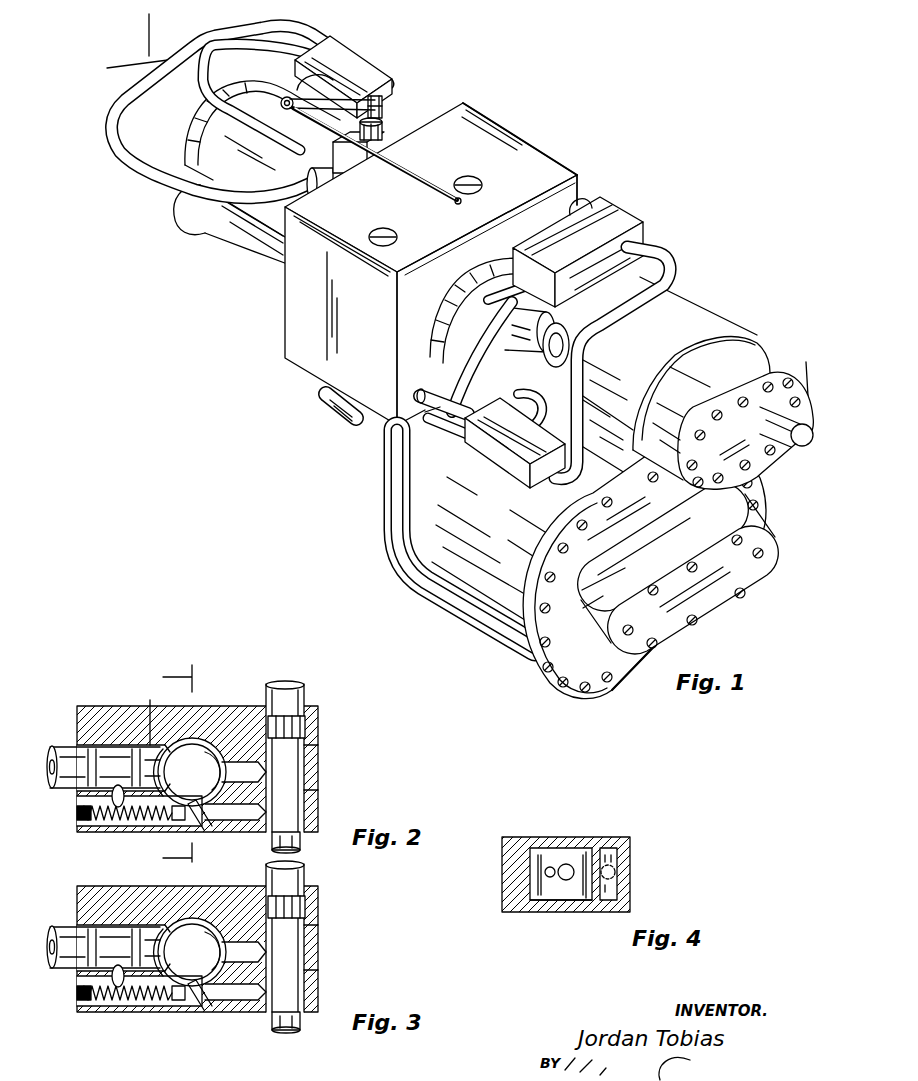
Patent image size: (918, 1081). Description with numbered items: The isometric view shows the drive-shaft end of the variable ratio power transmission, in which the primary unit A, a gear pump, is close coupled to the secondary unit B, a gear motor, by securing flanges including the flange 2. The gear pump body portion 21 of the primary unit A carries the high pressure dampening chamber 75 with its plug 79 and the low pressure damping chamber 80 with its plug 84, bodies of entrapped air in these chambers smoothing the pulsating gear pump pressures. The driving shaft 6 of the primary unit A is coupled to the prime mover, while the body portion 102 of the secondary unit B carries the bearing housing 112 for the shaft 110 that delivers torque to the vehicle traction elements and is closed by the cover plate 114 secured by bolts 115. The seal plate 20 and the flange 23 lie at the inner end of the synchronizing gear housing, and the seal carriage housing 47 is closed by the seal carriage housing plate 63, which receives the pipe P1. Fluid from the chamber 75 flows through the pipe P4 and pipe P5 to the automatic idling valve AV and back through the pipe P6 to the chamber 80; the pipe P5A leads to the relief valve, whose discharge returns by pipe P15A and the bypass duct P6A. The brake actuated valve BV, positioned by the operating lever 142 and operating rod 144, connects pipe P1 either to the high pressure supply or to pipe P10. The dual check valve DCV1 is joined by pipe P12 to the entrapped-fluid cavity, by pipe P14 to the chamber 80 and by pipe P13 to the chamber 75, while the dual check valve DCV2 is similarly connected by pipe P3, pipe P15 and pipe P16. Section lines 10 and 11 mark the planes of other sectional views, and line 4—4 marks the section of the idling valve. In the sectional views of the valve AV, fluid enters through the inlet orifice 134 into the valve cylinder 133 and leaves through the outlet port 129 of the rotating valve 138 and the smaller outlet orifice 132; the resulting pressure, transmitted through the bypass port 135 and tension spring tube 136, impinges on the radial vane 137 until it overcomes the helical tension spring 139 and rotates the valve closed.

In FIG. 1, the pump/motor drum end cap 10 is at (146, 50).
In FIG. 1, the section line 11 is at (459, 219).
In FIG. 1, the pipe P1 is at (214, 96).
In FIG. 1, the seal carriage housing plate 63 is at (202, 127).
In FIG. 1, the operating lever 142 is at (287, 112).
In FIG. 1, the brake actuated valve BV is at (333, 150).
In FIG. 1, the pipe P10 is at (322, 170).
In FIG. 1, the pipe P14 is at (178, 172).
In FIG. 1, the seal carriage housing 47 is at (258, 240).
In FIG. 1, the dual check valve DCV1 is at (348, 47).
In FIG. 1, the pipe P12 is at (385, 73).
In FIG. 1, the pipe P13 is at (399, 92).
In FIG. 1, the primary unit A is at (497, 115).
In FIG. 1, the gear pump body portion 21 is at (520, 133).
In FIG. 1, the low pressure damping chamber 80 is at (537, 150).
In FIG. 1, the operating rod 144 is at (407, 162).
In FIG. 1, the plug 84 is at (481, 185).
In FIG. 1, the plug 79 is at (397, 236).
In FIG. 1, the high pressure dampening chamber 75 is at (305, 306).
In FIG. 1, the shaft 110 is at (340, 406).
In FIG. 1, the seal plate 20 is at (462, 290).
In FIG. 1, the pipe P5A is at (492, 314).
In FIG. 1, the flange 23 is at (455, 343).
In FIG. 1, the pipe P4 is at (413, 392).
In FIG. 1, the pipe P5 is at (466, 365).
In FIG. 2, the pipe P5 is at (65, 745).
In FIG. 3, the pipe P5 is at (94, 929).
In FIG. 1, the fluid relief and replenishing pipe P3 is at (558, 399).
In FIG. 1, the securing flange 2 is at (432, 420).
In FIG. 1, the pipe P16 is at (462, 440).
In FIG. 1, the dual check valve DCV2 is at (532, 488).
In FIG. 1, the secondary unit body portion 102 is at (410, 540).
In FIG. 1, the secondary unit B is at (440, 598).
In FIG. 1, the pipe P6 is at (585, 200).
In FIG. 2, the pipe P6 is at (308, 700).
In FIG. 3, the pipe P6 is at (308, 935).
In FIG. 1, the automatic idling valve AV is at (637, 213).
In FIG. 2, the automatic idling valve AV is at (128, 705).
In FIG. 4, the automatic idling valve AV is at (622, 841).
In FIG. 1, the pipe P15 is at (657, 256).
In FIG. 2, the pipe P15 is at (305, 836).
In FIG. 3, the pipe P15 is at (314, 1022).
In FIG. 1, the pipe P15A is at (570, 345).
In FIG. 1, the drive shaft 6 is at (768, 425).
In FIG. 1, the bearing housing 112 is at (750, 506).
In FIG. 1, the bolts 115 is at (558, 693).
In FIG. 1, the cover plate 114 is at (603, 690).
In FIG. 2, the inlet orifice 134 is at (148, 700).
In FIG. 2, the section line 4 is at (177, 768).
In FIG. 2, the rotating valve 138 is at (180, 720).
In FIG. 3, the rotating valve 138 is at (214, 983).
In FIG. 4, the rotating valve 138 is at (540, 856).
In FIG. 2, the valve cylinder 133 is at (190, 740).
In FIG. 4, the valve cylinder 133 is at (568, 906).
In FIG. 2, the outlet orifice 132 is at (215, 735).
In FIG. 3, the outlet orifice 132 is at (205, 925).
In FIG. 4, the outlet orifice 132 is at (568, 865).
In FIG. 2, the bypass duct P6A is at (320, 758).
In FIG. 3, the bypass duct P6A is at (229, 950).
In FIG. 2, the outlet port 129 is at (210, 770).
In FIG. 3, the outlet port 129 is at (192, 952).
In FIG. 4, the outlet port 129 is at (551, 866).
In FIG. 2, the bypass port 135 is at (80, 797).
In FIG. 3, the bypass port 135 is at (77, 980).
In FIG. 2, the tension spring tube 136 is at (125, 832).
In FIG. 3, the tension spring tube 136 is at (127, 1015).
In FIG. 2, the helical tension spring 139 is at (152, 832).
In FIG. 3, the helical tension spring 139 is at (153, 1019).
In FIG. 2, the radial vane 137 is at (205, 820).
In FIG. 3, the radial vane 137 is at (181, 1020).
In FIG. 4, the radial vane 137 is at (612, 886).